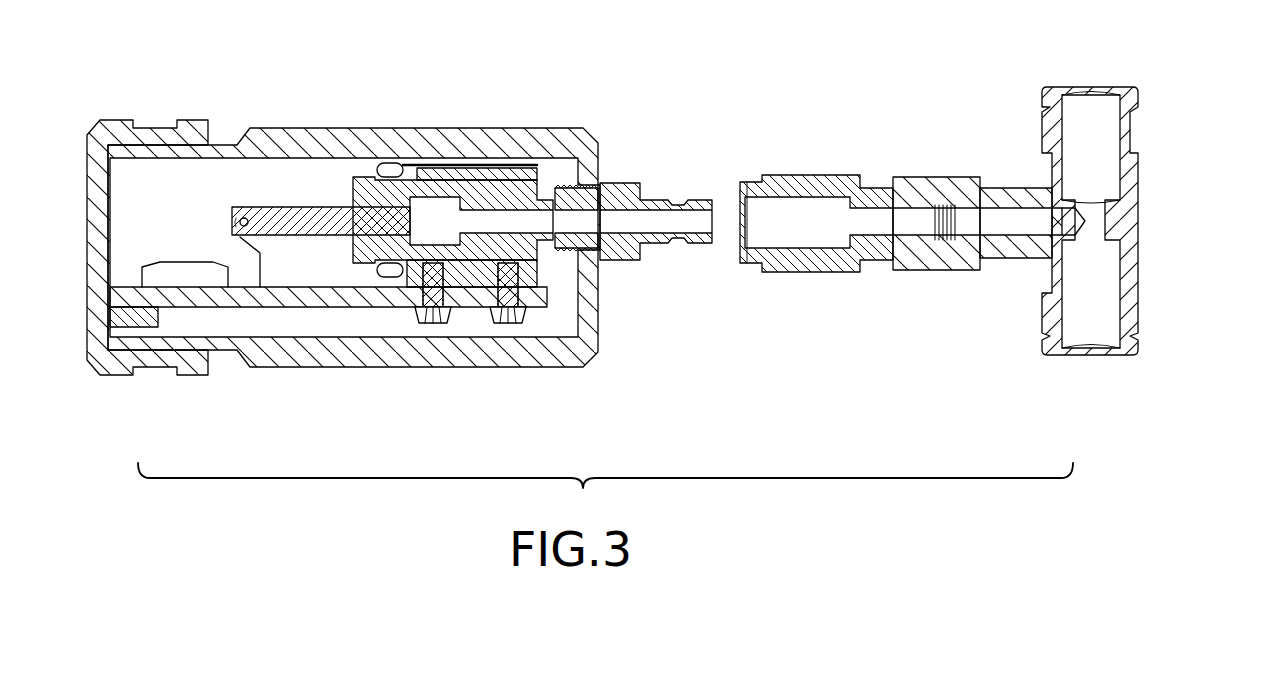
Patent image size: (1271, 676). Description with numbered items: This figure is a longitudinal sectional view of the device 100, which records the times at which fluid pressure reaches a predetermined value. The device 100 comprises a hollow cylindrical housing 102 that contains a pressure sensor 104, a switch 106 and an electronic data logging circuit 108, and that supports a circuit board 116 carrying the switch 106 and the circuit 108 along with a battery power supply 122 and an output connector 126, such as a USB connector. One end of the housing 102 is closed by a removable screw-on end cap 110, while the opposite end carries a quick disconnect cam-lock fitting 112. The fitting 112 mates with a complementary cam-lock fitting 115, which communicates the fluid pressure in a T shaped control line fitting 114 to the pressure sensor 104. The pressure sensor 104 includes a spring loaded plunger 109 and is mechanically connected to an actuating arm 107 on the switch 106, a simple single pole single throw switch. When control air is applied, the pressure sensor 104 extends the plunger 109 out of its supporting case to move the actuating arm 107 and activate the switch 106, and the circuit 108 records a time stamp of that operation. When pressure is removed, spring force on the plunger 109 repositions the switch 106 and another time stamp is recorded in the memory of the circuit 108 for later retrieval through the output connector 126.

The device 100 is at (615, 122).
The housing 102 is at (440, 128).
The pressure sensor 104 is at (496, 192).
The switch 106 is at (297, 250).
The actuating arm 107 is at (247, 218).
The electronic data logging circuit 108 is at (362, 274).
The spring loaded plunger 109 is at (342, 173).
The end cap 110 is at (112, 120).
The cam-lock fitting 112 is at (647, 202).
The T shaped control line fitting 114 is at (1140, 111).
The complementary cam-lock fitting 115 is at (830, 182).
The circuit board 116 is at (290, 293).
The battery power supply 122 is at (182, 276).
The output connector 126 is at (128, 328).